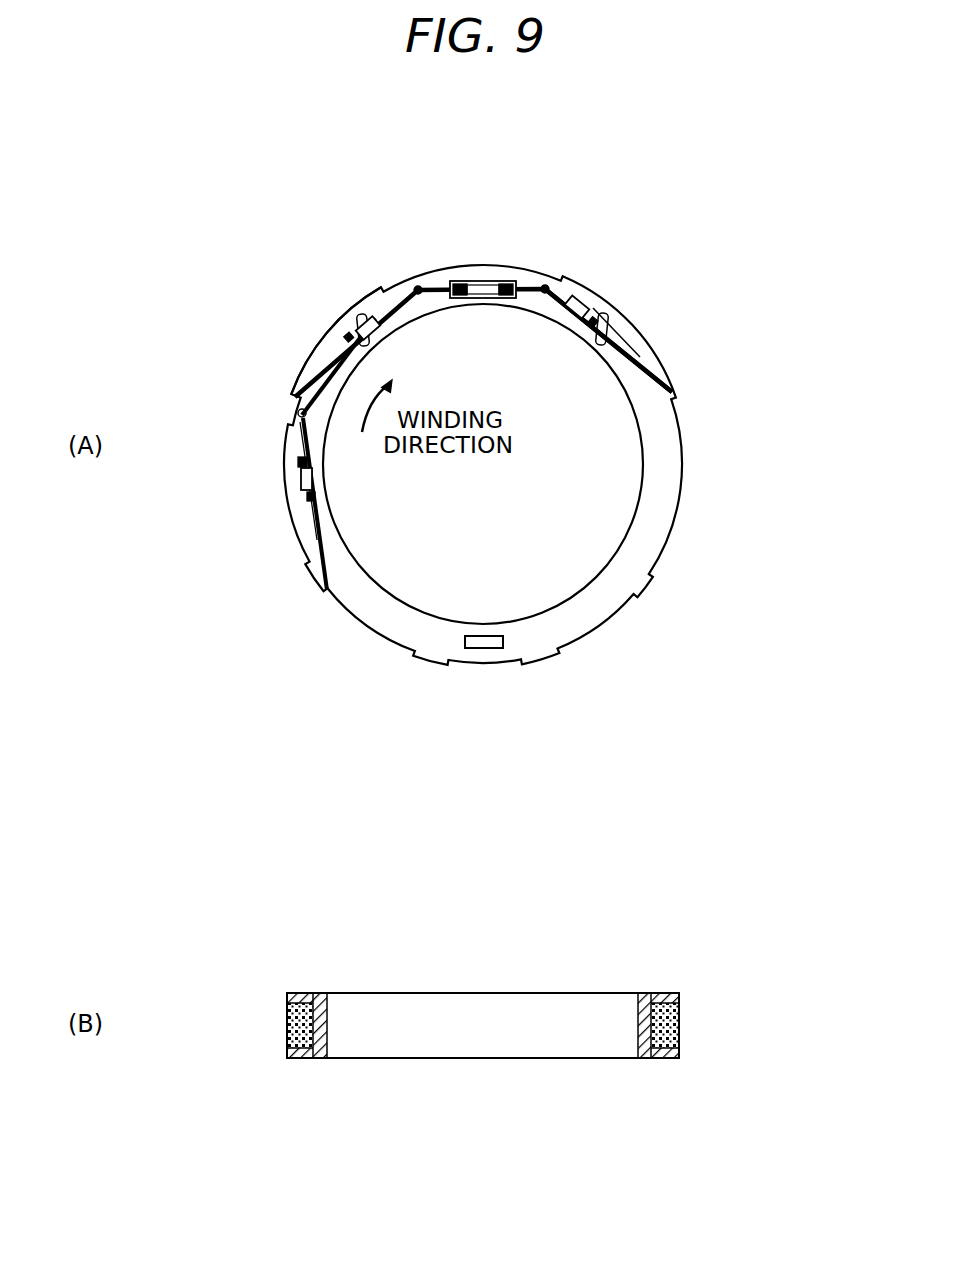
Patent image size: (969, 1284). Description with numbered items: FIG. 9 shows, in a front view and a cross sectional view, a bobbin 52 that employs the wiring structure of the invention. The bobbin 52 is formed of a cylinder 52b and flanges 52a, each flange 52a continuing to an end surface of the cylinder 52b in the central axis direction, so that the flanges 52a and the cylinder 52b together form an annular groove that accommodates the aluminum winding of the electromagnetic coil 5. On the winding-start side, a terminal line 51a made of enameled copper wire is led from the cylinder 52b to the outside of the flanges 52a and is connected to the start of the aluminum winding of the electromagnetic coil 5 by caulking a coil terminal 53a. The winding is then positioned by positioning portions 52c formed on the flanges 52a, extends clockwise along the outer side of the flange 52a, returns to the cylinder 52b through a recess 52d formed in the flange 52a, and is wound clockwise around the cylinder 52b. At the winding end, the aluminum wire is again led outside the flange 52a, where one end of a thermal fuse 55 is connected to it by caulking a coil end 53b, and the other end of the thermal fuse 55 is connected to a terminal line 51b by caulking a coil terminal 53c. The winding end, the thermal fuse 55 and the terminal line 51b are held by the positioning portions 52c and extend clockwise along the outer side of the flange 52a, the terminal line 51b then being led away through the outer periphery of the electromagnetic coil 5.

The electromagnetic coil 5 is at (300, 420).
The terminal line 51a is at (317, 548).
The terminal line 51b is at (645, 356).
The bobbin 52 is at (546, 688).
The flange 52a is at (652, 576).
The cylinder 52b is at (330, 1020).
The positioning portion 52c is at (543, 293).
The recess 52d is at (370, 295).
The coil terminal 53a is at (302, 480).
The coil end 53b is at (372, 330).
The coil terminal 53c is at (583, 300).
The thermal fuse 55 is at (468, 282).